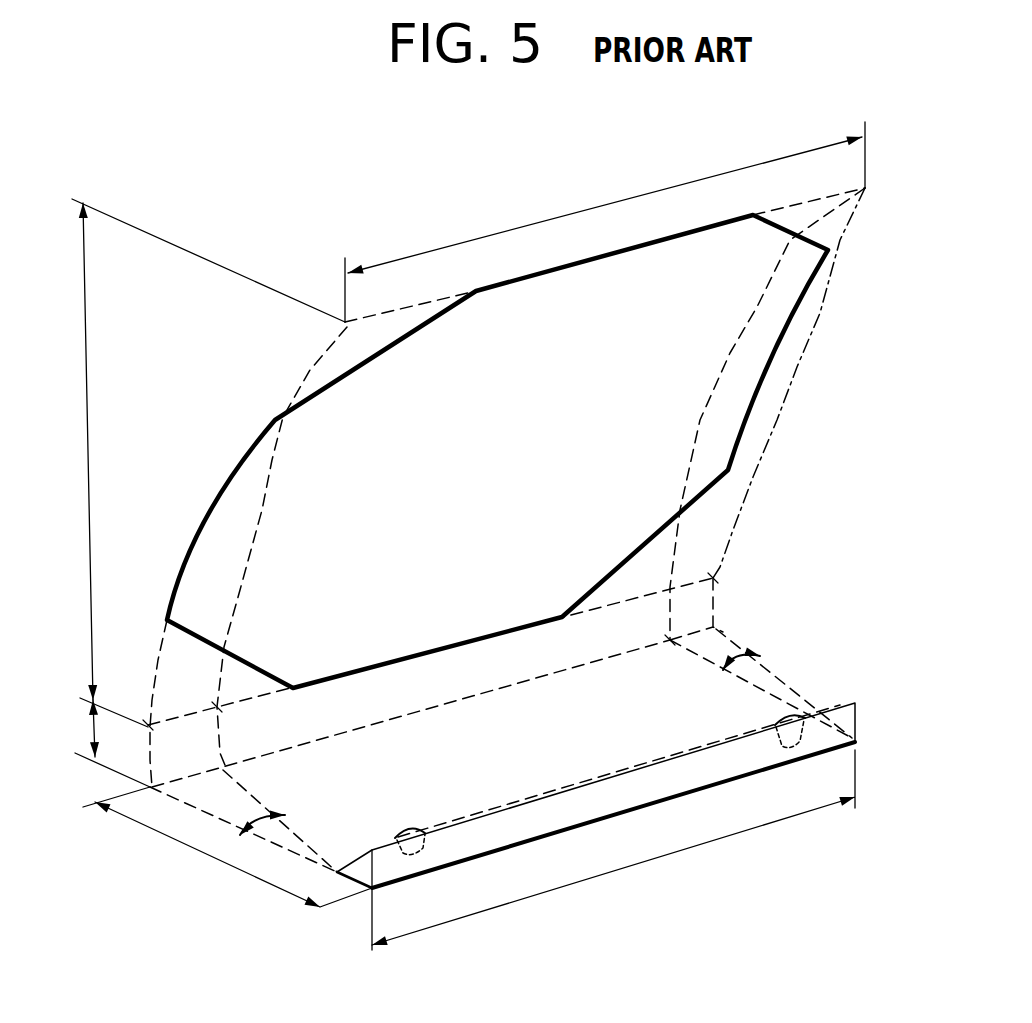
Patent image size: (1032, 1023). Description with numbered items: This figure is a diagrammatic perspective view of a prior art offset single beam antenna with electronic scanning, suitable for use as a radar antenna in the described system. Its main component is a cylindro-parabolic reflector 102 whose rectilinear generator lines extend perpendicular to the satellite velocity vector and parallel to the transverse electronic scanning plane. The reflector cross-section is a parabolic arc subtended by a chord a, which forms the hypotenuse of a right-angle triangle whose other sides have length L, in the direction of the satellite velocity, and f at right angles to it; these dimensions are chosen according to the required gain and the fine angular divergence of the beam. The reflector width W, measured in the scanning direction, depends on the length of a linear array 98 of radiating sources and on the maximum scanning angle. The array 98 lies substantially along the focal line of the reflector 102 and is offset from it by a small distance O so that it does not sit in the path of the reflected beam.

The cylindro-parabolic reflector 102 is at (333, 468).
The linear array of radiating sources 98 is at (573, 792).
The chord a is at (775, 422).
The reflector dimension in the direction of the satellite velocity vector L is at (88, 520).
The offset distance O is at (93, 730).
The width of the reflector W is at (567, 215).
The reflector dimension at right-angles to L f is at (200, 853).